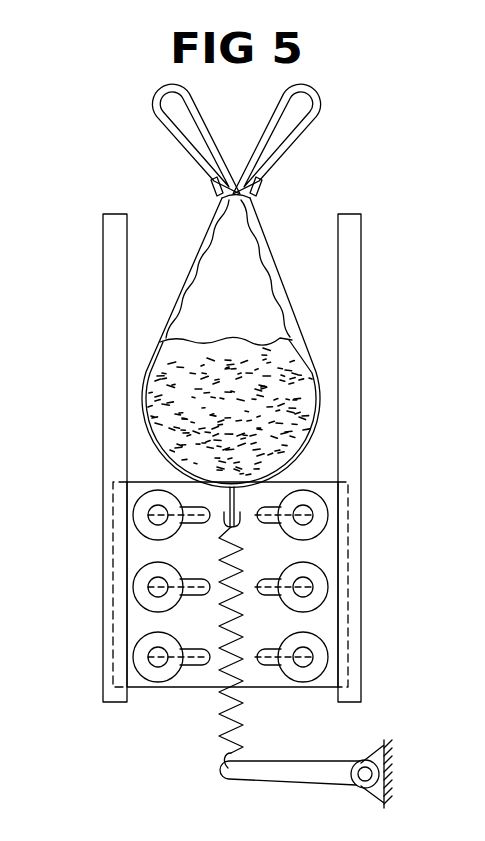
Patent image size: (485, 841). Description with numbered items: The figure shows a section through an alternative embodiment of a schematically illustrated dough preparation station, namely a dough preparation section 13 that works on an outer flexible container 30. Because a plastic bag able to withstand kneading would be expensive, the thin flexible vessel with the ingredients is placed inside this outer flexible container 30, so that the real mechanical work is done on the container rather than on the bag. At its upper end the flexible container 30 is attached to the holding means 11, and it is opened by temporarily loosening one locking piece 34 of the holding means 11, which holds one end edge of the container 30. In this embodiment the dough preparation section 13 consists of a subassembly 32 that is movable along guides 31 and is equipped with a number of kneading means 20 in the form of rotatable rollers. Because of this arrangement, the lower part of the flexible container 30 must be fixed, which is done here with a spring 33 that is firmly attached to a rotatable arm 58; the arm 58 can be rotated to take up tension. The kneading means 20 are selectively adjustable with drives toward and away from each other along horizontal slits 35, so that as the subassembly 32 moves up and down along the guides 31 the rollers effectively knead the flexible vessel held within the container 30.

The holding means 11 is at (143, 101).
The dough preparation section 13 is at (245, 525).
The kneading means 20 is at (268, 612).
The outer flexible container 30 is at (203, 237).
The guides 31 is at (110, 273).
The subassembly 32 is at (317, 550).
The spring 33 is at (241, 715).
The locking piece 34 is at (212, 182).
The horizontal slits 35 is at (193, 659).
The rotatable arm 58 is at (287, 771).